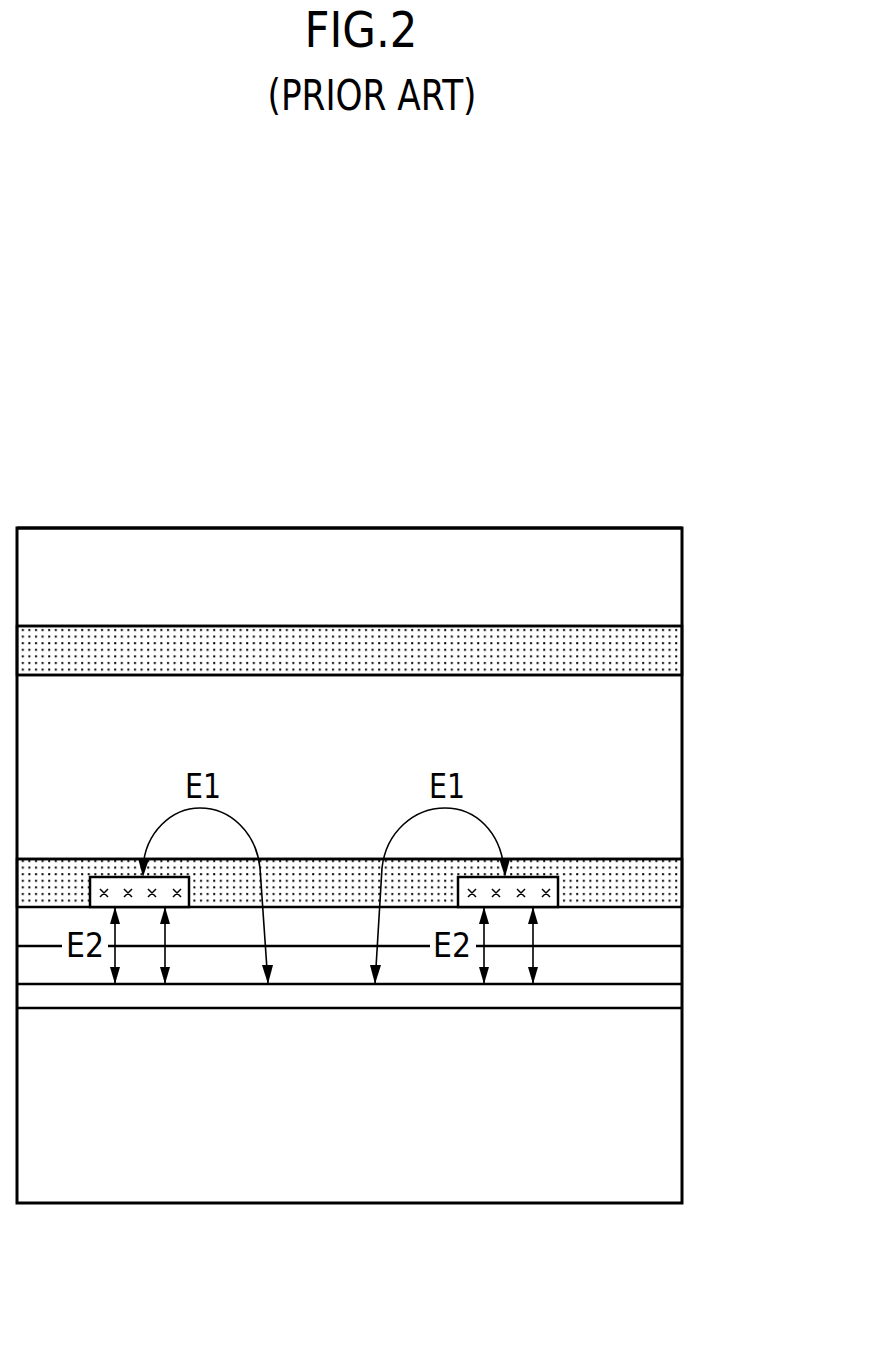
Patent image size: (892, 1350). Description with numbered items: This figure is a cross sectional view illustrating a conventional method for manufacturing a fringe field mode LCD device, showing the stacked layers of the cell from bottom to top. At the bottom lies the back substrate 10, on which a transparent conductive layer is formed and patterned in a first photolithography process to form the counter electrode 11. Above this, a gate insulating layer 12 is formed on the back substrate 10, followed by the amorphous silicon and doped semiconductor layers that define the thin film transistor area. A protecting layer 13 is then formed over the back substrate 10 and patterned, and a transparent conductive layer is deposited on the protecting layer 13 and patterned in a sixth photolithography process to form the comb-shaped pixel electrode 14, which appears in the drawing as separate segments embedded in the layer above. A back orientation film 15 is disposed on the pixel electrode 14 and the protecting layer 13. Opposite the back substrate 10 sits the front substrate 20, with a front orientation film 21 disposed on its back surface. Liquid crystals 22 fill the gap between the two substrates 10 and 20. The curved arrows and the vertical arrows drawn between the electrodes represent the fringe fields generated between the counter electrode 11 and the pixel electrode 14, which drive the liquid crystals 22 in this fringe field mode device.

The back substrate 10 is at (668, 1107).
The counter electrode 11 is at (668, 1004).
The gate insulating layer 12 is at (668, 967).
The protecting layer 13 is at (668, 929).
The comb-shaped pixel electrode 14 is at (550, 892).
The back orientation film 15 is at (668, 890).
The front substrate 20 is at (668, 582).
The front orientation film 21 is at (668, 654).
The liquid crystals 22 is at (668, 775).